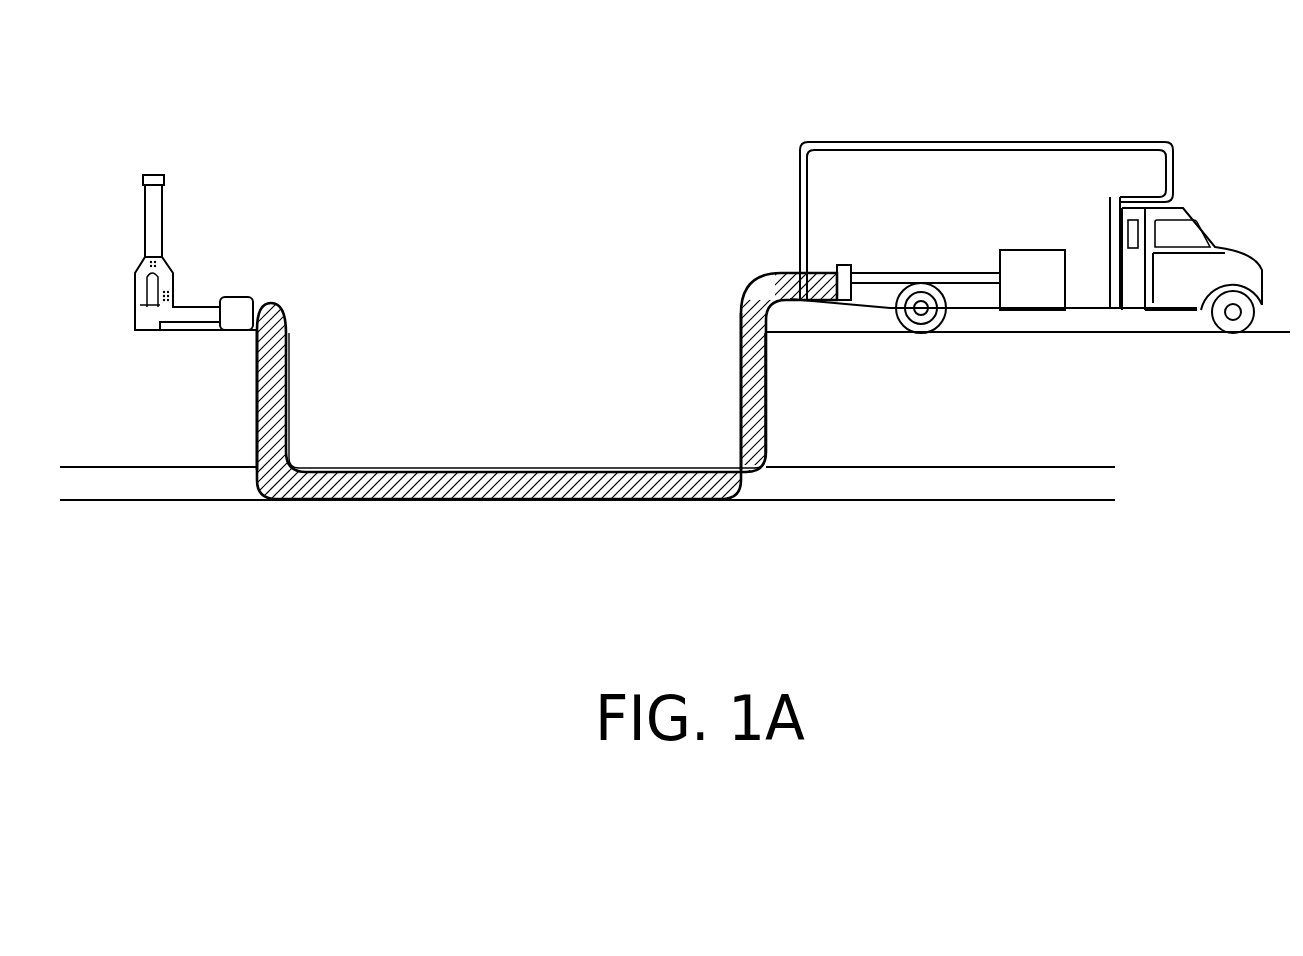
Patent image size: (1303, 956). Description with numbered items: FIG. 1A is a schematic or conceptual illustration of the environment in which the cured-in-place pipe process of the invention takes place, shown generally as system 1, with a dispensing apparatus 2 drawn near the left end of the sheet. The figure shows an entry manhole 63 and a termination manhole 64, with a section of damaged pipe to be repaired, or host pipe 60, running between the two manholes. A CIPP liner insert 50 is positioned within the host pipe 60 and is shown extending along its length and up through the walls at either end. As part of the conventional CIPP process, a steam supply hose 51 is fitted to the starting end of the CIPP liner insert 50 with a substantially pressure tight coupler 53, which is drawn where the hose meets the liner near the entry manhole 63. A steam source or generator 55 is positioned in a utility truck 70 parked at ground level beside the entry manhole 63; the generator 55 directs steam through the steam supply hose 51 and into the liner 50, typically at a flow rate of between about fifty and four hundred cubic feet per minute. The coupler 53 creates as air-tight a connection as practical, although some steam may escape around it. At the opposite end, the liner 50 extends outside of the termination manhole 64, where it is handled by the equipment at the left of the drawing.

The fluid containment system 1 is at (330, 258).
The dispensing pump / fuel dispenser 2 is at (185, 258).
The CIPP liner insert 50 is at (700, 492).
The steam supply hose 51 is at (887, 273).
The pressure tight coupler 53 is at (843, 264).
The steam source or generator 55 is at (1005, 250).
The host pipe 60 is at (492, 468).
The entry manhole 63 is at (768, 388).
The termination manhole 64 is at (260, 382).
The utility truck 70 is at (1158, 125).